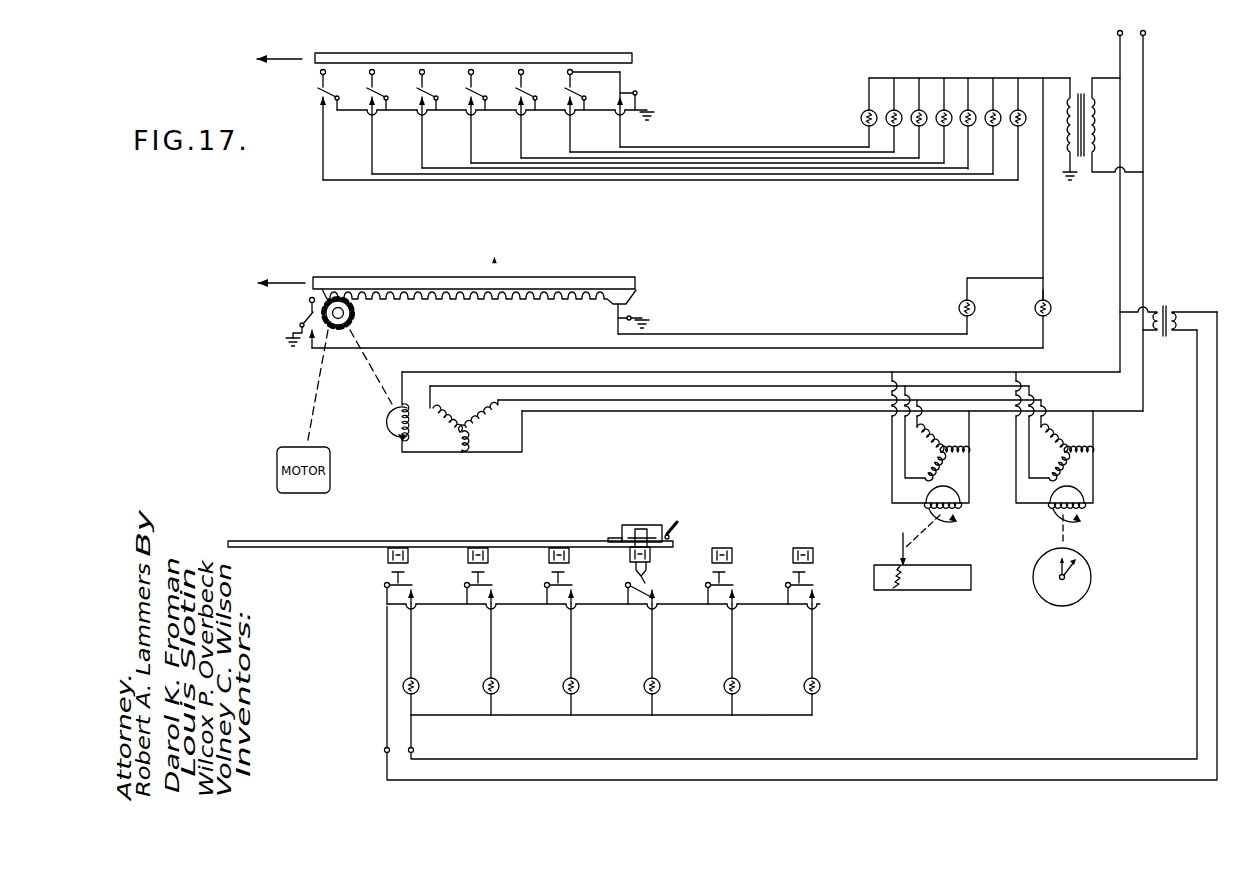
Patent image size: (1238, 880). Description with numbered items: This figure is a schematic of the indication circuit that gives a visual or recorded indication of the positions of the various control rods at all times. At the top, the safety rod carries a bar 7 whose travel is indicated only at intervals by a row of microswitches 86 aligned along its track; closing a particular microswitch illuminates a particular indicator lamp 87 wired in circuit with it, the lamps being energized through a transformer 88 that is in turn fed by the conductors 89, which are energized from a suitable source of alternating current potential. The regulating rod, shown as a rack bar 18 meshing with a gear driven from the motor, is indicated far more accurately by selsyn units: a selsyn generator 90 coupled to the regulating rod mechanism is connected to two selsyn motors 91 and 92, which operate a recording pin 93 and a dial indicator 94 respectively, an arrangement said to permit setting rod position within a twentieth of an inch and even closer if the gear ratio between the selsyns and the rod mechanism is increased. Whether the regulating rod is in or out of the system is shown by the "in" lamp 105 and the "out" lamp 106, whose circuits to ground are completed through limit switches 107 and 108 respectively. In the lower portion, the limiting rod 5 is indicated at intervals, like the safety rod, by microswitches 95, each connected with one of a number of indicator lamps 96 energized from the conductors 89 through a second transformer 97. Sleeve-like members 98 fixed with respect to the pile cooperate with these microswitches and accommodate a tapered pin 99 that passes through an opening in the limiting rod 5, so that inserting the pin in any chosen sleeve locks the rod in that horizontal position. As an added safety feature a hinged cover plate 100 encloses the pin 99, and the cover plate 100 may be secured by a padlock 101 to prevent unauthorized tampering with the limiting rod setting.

The switch actuating bar 7 is at (559, 64).
The microswitches 86 is at (362, 80).
The indicator lamp 87 is at (889, 112).
The transformer 88 is at (1078, 84).
The conductors 89 is at (1145, 49).
The rack bar 18 is at (567, 286).
The limit switch 107 is at (305, 318).
The limit switch 108 is at (630, 314).
The "in" lamp 105 is at (1048, 313).
The "out" lamp 106 is at (973, 313).
The transformer 97 is at (1170, 310).
The selsyn generator 90 is at (443, 440).
The selsyn motor 91 is at (950, 472).
The selsyn motor 92 is at (1078, 460).
The recording pin 93 is at (905, 555).
The dial indicator 94 is at (1085, 568).
The limiting rod 5 is at (518, 542).
The sleeve-like members 98 is at (386, 556).
The microswitches 95 is at (449, 573).
The indicator lamps 96 is at (483, 686).
The tapered pin 99 is at (651, 527).
The hinged cover plate 100 is at (624, 525).
The padlock 101 is at (680, 527).